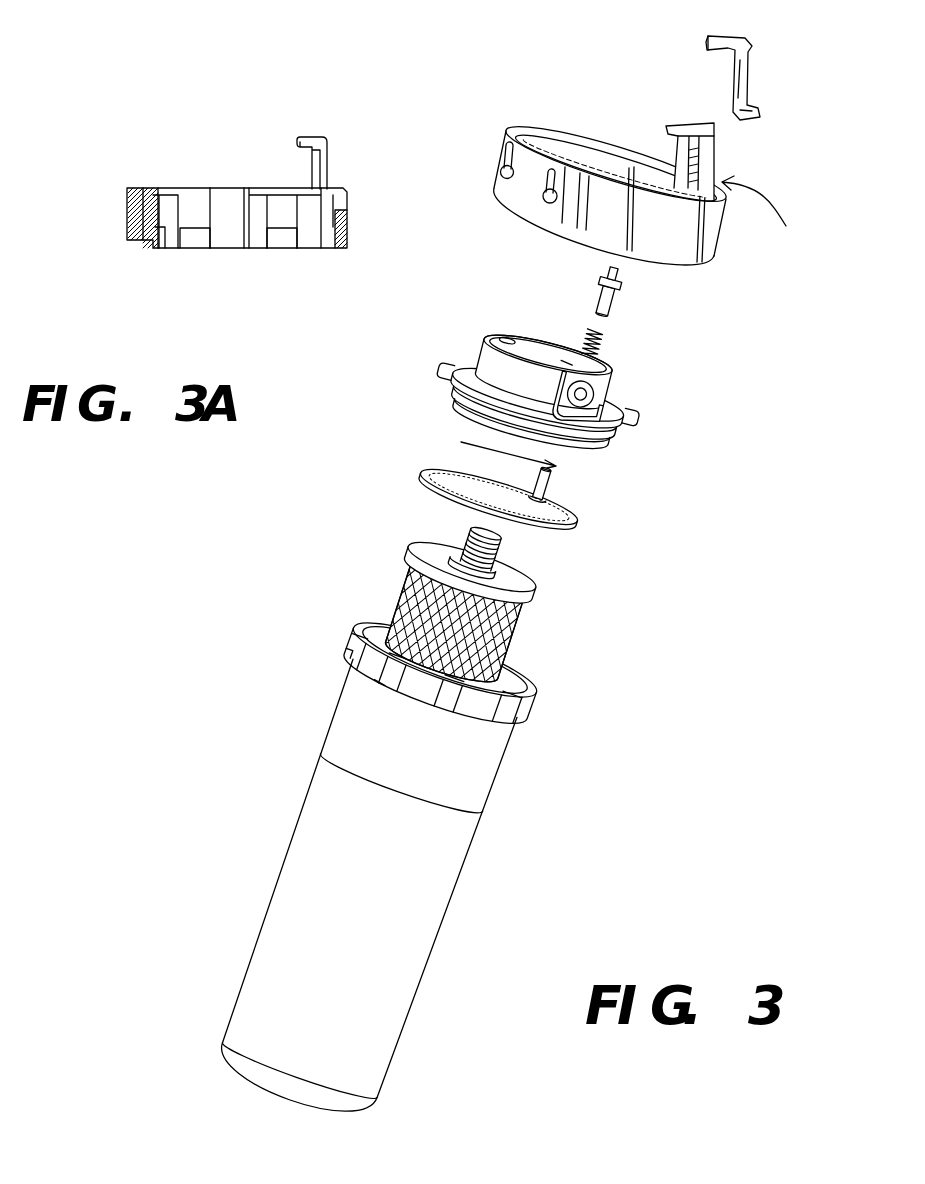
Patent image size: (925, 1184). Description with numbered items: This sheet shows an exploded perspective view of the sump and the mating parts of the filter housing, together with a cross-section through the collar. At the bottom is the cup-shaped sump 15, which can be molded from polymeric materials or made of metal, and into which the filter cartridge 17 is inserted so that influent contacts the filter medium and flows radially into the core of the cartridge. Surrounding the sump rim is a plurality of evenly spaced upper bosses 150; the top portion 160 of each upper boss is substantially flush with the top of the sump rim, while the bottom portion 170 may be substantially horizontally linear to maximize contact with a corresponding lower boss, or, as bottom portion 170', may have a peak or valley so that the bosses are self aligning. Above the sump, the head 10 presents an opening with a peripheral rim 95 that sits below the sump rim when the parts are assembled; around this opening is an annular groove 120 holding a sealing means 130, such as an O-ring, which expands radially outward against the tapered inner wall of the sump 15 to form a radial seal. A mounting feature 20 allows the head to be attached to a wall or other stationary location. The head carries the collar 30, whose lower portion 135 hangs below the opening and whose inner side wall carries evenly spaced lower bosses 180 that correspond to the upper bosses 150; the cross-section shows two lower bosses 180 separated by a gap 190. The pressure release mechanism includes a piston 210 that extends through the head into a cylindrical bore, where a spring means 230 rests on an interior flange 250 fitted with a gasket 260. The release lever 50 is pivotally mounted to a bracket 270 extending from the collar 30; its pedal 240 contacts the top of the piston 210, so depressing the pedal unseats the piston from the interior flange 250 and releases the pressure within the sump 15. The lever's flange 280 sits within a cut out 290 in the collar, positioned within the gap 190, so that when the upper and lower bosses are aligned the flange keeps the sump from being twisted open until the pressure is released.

In FIG. 3, the head 10 is at (476, 334).
In FIG. 3, the sump 15 is at (418, 922).
In FIG. 3, the filter cartridge 17 is at (520, 630).
In FIG. 3, the mounting feature 20 is at (527, 170).
In FIG. 3, the collar 30 is at (671, 233).
In FIG. 3, the release lever 50 is at (757, 57).
In FIG. 3, the peripheral rim 95 is at (614, 433).
In FIG. 3, the annular groove 120 is at (455, 394).
In FIG. 3, the sealing means 130 is at (560, 523).
In FIG. 3, the lower portion 135 is at (652, 257).
In FIG. 3, the upper bosses 150 is at (453, 692).
In FIG. 3, the top portion 160 is at (358, 627).
In FIG. 3, the bottom portion 170 is at (294, 662).
In FIG. 3, the bottom portion 170' is at (307, 707).
In FIG. 3A, the lower bosses 180 is at (180, 250).
In FIG. 3A, the gap 190 is at (226, 215).
In FIG. 3, the piston 210 is at (603, 303).
In FIG. 3, the spring means 230 is at (600, 342).
In FIG. 3, the pedal 240 is at (728, 40).
In FIG. 3, the interior flange 250 is at (534, 500).
In FIG. 3, the gasket 260 is at (482, 445).
In FIG. 3, the bracket 270 is at (686, 134).
In FIG. 3, the flange 280 is at (750, 117).
In FIG. 3, the cut out 290 is at (782, 211).